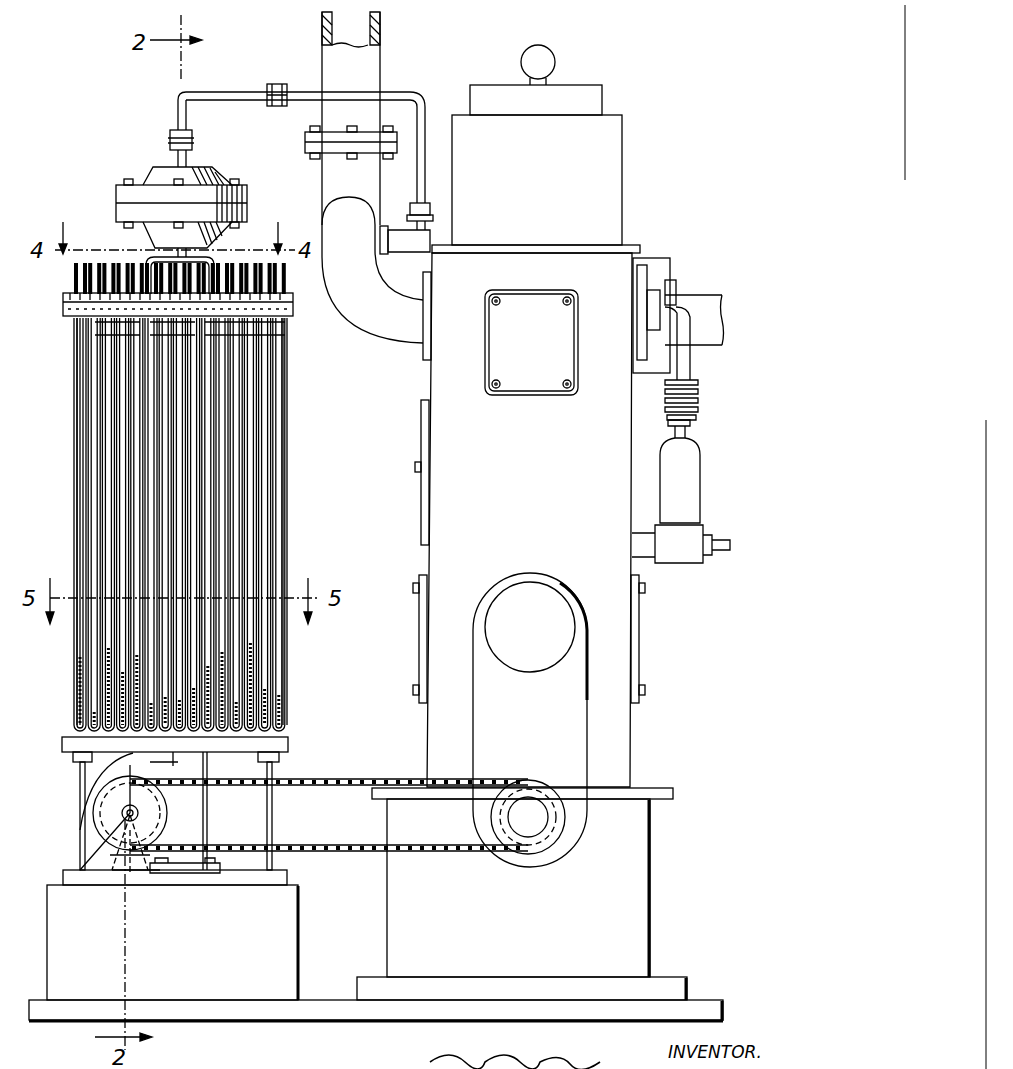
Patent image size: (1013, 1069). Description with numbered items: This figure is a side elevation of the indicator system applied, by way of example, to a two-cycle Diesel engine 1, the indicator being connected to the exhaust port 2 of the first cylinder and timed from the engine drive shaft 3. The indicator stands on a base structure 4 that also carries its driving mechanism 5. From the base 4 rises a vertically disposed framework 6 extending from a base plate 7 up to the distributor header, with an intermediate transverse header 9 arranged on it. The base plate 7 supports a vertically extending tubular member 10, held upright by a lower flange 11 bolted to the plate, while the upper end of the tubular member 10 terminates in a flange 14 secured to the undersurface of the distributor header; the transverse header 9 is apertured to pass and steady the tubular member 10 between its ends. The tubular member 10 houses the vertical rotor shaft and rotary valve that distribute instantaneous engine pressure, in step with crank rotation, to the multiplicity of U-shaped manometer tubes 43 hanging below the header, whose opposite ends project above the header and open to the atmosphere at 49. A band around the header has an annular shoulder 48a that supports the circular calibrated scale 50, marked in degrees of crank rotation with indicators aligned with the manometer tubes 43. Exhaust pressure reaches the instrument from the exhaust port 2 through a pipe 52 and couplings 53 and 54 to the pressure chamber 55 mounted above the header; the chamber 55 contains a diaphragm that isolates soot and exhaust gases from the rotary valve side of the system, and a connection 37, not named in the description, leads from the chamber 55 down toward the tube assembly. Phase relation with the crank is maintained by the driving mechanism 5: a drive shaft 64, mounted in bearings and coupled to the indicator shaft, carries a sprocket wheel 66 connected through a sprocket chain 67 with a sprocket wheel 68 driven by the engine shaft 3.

The Diesel engine 1 is at (522, 501).
The exhaust port 2 is at (400, 322).
The drive shaft 3 is at (528, 817).
The base structure 4 is at (290, 960).
The driving mechanism 5 is at (100, 805).
The framework 6 is at (78, 772).
The base plate 7 is at (275, 880).
The transverse header 9 is at (268, 742).
The tubular member 10 is at (205, 816).
The flange 11 is at (208, 873).
The flange 14 is at (148, 330).
The stem 37 is at (208, 246).
The manometer tubes 43 is at (262, 430).
The annular shoulder 48a is at (285, 330).
The open ends of manometer tubes 49 is at (95, 285).
The circular calibrated scale 50 is at (72, 303).
The pipe 52 is at (418, 100).
The coupling 53 is at (278, 84).
The coupling 54 is at (193, 140).
The pressure chamber 55 is at (150, 196).
The drive shaft 64 is at (128, 815).
The sprocket wheel 66 is at (110, 818).
The sprocket chain 67 is at (340, 786).
The sprocket wheel 68 is at (555, 838).